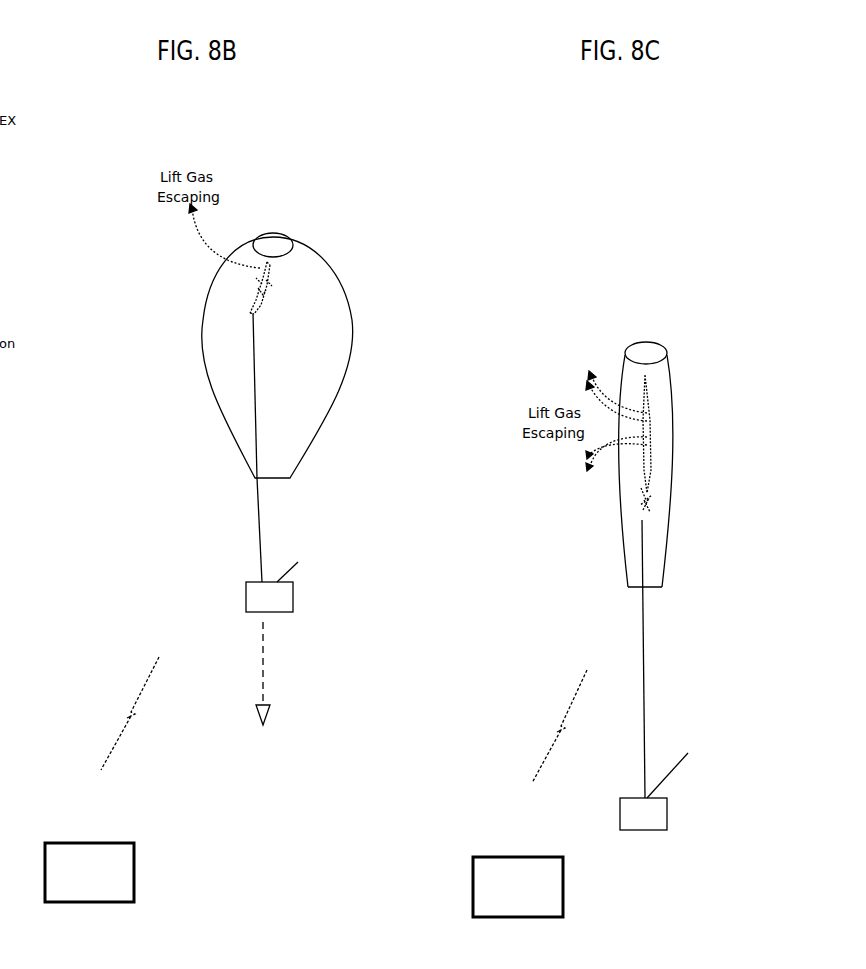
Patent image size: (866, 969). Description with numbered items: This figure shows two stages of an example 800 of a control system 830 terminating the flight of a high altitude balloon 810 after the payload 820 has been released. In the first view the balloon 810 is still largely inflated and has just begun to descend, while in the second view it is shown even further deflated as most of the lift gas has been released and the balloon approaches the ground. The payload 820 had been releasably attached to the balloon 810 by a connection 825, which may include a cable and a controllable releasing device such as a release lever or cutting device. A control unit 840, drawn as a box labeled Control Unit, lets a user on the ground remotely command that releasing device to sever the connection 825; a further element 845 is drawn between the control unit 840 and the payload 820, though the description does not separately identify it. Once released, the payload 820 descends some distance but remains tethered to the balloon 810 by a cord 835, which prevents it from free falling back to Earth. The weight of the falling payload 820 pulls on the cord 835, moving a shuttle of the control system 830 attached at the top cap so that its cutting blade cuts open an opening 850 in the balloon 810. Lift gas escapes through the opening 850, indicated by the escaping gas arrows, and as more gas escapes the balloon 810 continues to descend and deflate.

In FIG. 8B, the example 800 is at (403, 60).
In FIG. 8C, the example 800 is at (841, 60).
In FIG. 8B, the balloon 810 is at (347, 397).
In FIG. 8C, the balloon 810 is at (681, 494).
In FIG. 8B, the payload 820 is at (246, 596).
In FIG. 8C, the payload 820 is at (620, 813).
In FIG. 8B, the connection 825 is at (293, 568).
In FIG. 8C, the connection 825 is at (667, 778).
In FIG. 8B, the control system 830 is at (253, 297).
In FIG. 8C, the control system 830 is at (647, 502).
In FIG. 8B, the cord 835 is at (250, 377).
In FIG. 8C, the cord 835 is at (643, 670).
In FIG. 8B, the control unit 840 is at (49, 841).
In FIG. 8C, the control unit 840 is at (477, 857).
In FIG. 8B, the wireless communication link 845 is at (133, 711).
In FIG. 8C, the wireless communication link 845 is at (559, 718).
In FIG. 8B, the opening 850 is at (263, 272).
In FIG. 8C, the opening 850 is at (653, 420).